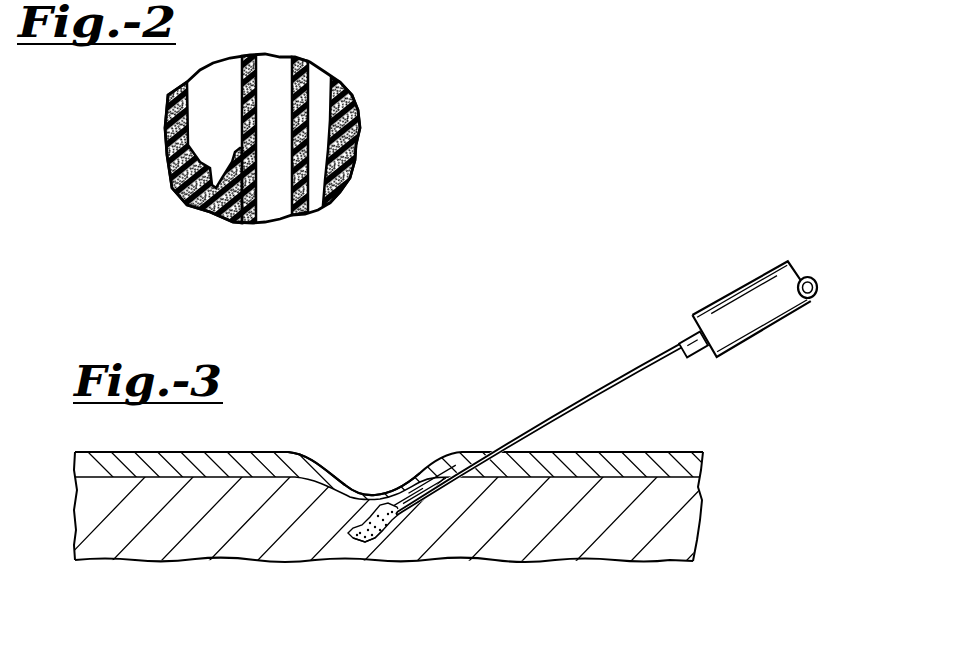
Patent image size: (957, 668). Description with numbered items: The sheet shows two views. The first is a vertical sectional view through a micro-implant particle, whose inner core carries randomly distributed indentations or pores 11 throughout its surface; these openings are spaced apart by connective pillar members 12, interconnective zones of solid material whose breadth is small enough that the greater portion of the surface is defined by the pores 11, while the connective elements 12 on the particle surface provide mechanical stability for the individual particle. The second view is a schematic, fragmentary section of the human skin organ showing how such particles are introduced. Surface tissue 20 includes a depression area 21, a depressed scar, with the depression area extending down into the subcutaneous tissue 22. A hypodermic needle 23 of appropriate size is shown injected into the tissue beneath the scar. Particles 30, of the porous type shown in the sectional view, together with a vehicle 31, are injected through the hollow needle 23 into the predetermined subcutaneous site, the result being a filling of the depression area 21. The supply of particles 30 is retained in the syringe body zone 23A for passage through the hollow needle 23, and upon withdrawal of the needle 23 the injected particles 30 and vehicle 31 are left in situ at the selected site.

In FIG. 2, the indentations or pores 11 is at (217, 90).
In FIG. 2, the connective pillar members 12 is at (358, 131).
In FIG. 3, the surface tissue 20 is at (280, 439).
In FIG. 3, the depression area 21 is at (372, 477).
In FIG. 3, the subcutaneous tissue 22 is at (565, 502).
In FIG. 3, the hollow needle 23 is at (527, 434).
In FIG. 3, the syringe body zone 23A is at (720, 302).
In FIG. 3, the particles 30 is at (372, 546).
In FIG. 3, the vehicle 31 is at (352, 538).